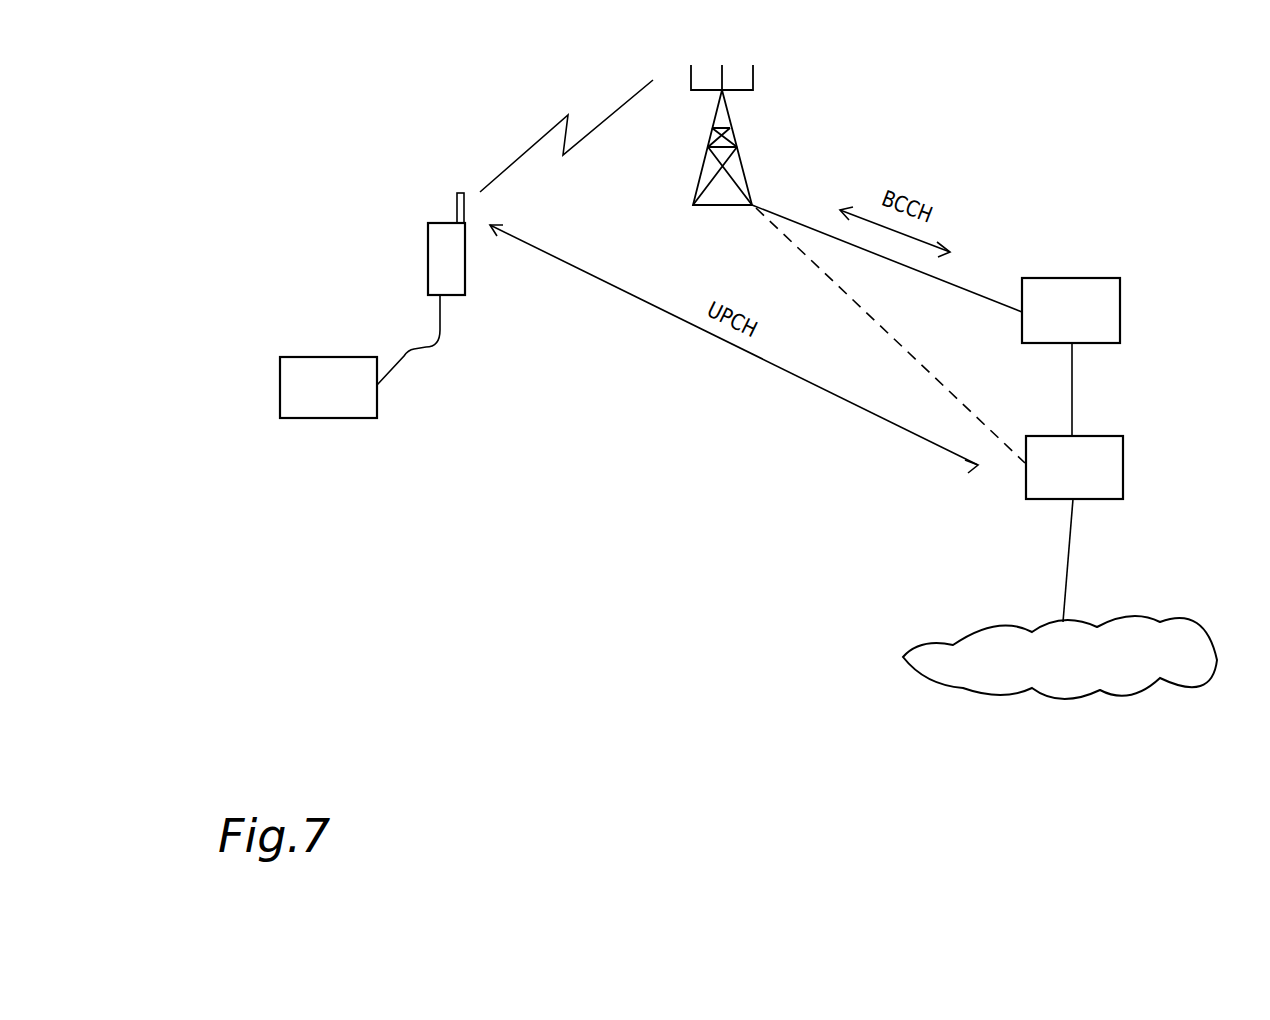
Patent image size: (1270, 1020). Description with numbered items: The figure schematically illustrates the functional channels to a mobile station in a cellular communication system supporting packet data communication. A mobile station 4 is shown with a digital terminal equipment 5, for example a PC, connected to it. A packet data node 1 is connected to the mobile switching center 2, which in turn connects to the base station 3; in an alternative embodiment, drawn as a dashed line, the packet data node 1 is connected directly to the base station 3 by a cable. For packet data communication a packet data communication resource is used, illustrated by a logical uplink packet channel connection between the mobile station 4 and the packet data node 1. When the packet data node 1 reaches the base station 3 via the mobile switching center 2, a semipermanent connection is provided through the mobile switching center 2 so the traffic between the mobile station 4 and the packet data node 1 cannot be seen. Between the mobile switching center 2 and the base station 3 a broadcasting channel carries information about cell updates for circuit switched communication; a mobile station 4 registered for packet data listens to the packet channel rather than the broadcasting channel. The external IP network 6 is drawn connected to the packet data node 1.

The packet data node 1 is at (1123, 465).
The mobile switching center 2 is at (1120, 312).
The base station 3 is at (747, 175).
The mobile station 4 is at (428, 262).
The digital terminal equipment 5 is at (280, 387).
The external network (IP) 6 is at (1217, 658).